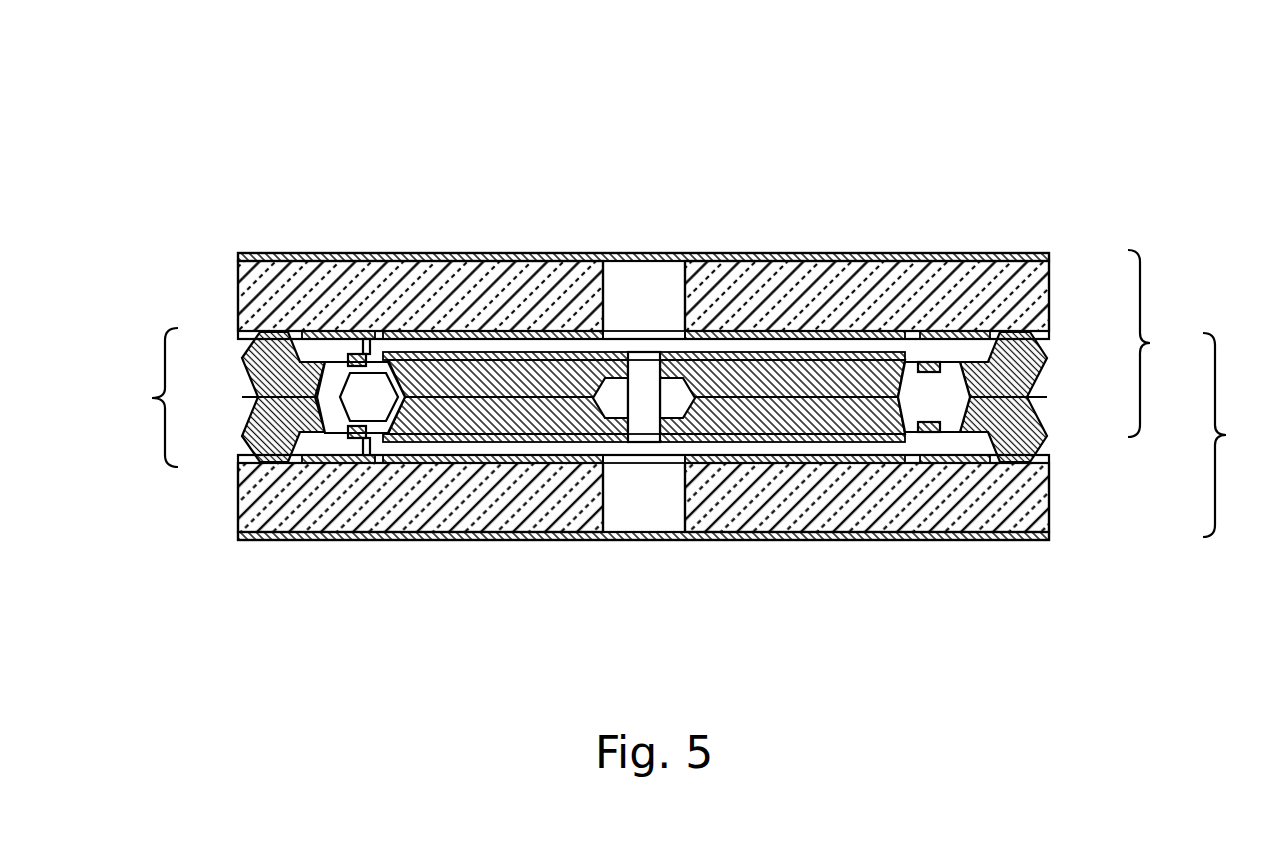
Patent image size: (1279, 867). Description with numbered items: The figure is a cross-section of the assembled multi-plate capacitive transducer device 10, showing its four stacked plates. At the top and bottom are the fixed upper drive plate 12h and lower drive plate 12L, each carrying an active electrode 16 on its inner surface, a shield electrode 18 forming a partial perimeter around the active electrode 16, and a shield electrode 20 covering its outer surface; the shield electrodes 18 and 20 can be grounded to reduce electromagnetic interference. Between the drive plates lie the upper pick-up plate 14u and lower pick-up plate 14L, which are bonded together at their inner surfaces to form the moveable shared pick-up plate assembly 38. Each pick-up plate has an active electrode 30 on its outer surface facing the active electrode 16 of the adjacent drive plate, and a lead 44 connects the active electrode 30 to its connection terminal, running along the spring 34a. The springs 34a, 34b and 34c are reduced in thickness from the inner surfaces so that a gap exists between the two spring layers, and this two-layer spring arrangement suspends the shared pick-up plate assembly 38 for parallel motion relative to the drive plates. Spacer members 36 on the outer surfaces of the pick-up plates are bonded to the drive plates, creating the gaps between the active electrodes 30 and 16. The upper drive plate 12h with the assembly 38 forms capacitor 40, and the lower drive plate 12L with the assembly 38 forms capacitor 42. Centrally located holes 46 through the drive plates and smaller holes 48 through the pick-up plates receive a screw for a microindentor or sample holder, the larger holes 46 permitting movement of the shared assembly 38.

The multi-plate capacitive transducer device 10 is at (1034, 199).
The upper drive plate 12h is at (1050, 290).
The lower drive plate 12L is at (1050, 498).
The upper pick-up plate 14u is at (1040, 378).
The lower pick-up plate 14L is at (1043, 417).
The active electrode 16 is at (492, 330).
The shield electrode 18 is at (330, 333).
The shield electrode 20 is at (852, 253).
The active electrode 30 is at (808, 352).
The spring 34a is at (358, 352).
The spring 34b is at (350, 376).
The spring 34c is at (935, 420).
The spacer member 36 is at (258, 348).
The shared pick-up plate assembly 38 is at (145, 397).
The capacitor 40 is at (1160, 343).
The capacitor 42 is at (1235, 435).
The lead 44 is at (366, 346).
The hole 46 is at (684, 290).
The hole 48 is at (662, 372).